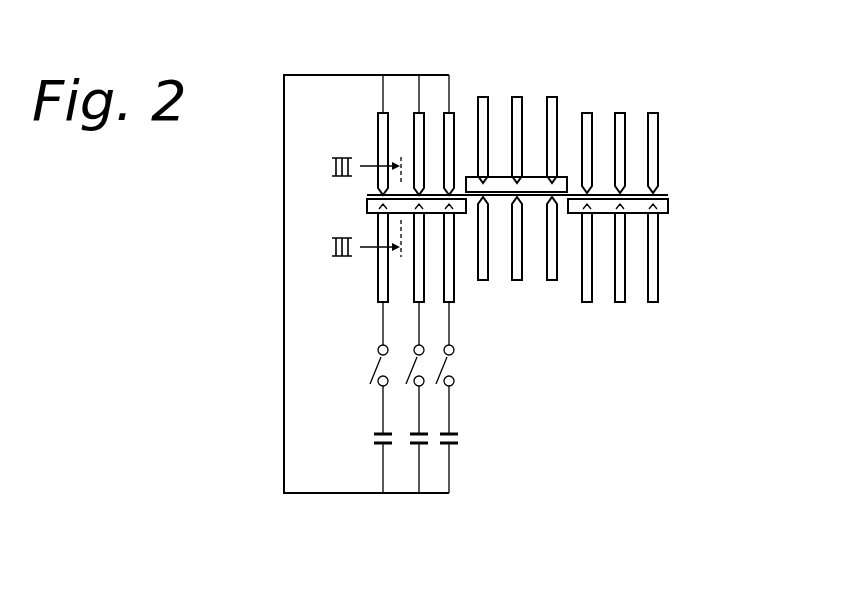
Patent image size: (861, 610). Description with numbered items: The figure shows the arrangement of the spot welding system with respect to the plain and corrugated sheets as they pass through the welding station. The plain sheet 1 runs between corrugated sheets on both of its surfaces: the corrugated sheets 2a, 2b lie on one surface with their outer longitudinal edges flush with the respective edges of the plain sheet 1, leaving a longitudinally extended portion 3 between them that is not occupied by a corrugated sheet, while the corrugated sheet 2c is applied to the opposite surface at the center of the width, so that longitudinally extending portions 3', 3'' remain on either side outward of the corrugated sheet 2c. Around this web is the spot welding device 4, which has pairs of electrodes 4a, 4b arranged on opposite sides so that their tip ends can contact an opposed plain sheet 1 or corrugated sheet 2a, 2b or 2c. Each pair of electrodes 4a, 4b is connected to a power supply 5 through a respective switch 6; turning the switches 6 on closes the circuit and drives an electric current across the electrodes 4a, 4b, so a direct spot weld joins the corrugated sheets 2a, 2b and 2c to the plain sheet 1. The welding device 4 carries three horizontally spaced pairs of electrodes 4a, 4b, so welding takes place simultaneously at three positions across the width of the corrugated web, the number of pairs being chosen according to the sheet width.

The plain sheet 1 is at (667, 195).
The corrugated sheet 2a is at (367, 206).
The corrugated sheet 2b is at (668, 208).
The corrugated sheet 2c is at (567, 177).
The longitudinally extended portion 3 is at (517, 260).
The longitudinally extending portion 3' is at (429, 111).
The longitudinally extending portion 3'' is at (629, 122).
The spot welding device 4 is at (673, 114).
The electrode 4a is at (378, 272).
The electrode 4b is at (377, 140).
The power supply 5 is at (458, 440).
The switch 6 is at (457, 366).